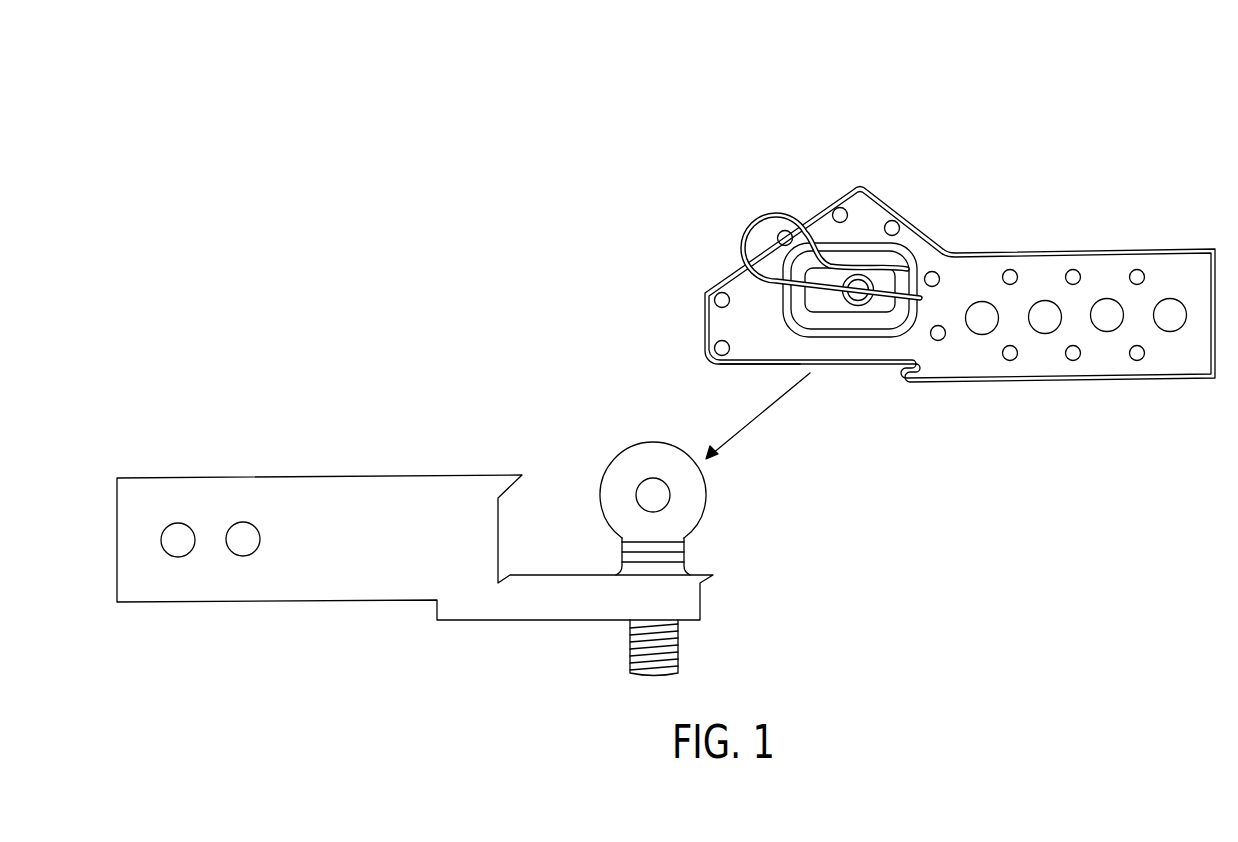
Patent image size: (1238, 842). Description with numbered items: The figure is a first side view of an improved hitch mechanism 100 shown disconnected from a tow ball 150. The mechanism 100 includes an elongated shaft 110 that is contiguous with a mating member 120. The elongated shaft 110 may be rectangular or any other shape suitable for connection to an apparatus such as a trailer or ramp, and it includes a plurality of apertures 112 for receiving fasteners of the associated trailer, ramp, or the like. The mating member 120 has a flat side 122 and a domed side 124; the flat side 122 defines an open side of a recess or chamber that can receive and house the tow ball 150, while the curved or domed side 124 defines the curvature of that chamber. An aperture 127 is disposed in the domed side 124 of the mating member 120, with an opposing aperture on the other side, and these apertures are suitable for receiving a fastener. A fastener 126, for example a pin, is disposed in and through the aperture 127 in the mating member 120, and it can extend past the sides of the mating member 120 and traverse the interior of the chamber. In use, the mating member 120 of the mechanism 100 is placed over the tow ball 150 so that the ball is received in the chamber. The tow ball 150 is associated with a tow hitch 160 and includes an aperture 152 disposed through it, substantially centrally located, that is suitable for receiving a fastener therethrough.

The hitch mechanism 100 is at (666, 379).
The elongated shaft 110 is at (1070, 382).
The apertures 112 is at (982, 301).
The mating member 120 is at (656, 306).
The flat side 122 is at (730, 372).
The domed side 124 is at (717, 283).
The fastener 126 is at (862, 300).
The aperture 127 is at (847, 305).
The tow ball 150 is at (708, 486).
The aperture 152 is at (670, 497).
The tow hitch 160 is at (540, 575).